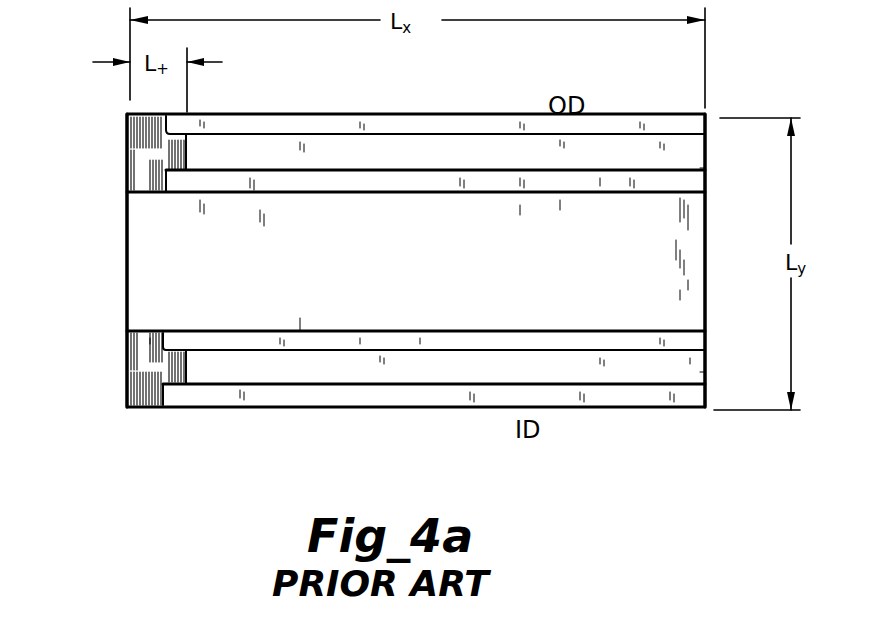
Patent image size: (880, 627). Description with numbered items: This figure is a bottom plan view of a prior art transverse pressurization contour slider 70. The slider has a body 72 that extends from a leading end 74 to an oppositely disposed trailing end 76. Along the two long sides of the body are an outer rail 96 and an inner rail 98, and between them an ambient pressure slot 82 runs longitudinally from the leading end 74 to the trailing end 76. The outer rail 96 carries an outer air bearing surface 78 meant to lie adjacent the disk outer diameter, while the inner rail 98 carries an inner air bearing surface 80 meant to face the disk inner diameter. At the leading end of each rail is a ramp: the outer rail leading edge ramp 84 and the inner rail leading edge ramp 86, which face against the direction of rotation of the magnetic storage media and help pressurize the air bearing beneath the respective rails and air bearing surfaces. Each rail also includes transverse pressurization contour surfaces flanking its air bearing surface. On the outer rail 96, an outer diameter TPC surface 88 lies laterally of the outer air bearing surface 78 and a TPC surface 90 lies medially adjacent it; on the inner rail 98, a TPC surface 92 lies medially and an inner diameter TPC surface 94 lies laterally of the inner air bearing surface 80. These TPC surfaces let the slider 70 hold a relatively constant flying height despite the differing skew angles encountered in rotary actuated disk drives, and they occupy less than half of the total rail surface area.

The prior art TPC slider 70 is at (182, 493).
The body 72 is at (708, 217).
The leading end 74 is at (110, 240).
The trailing end 76 is at (879, 137).
The outer air bearing surface 78 is at (470, 148).
The inner air bearing surface 80 is at (543, 370).
The ambient pressure slot 82 is at (663, 297).
The outer rail leading edge ramp 84 is at (157, 150).
The inner rail leading edge ramp 86 is at (147, 370).
The outer diameter TPC surface 88 is at (308, 64).
The TPC surface 90 is at (240, 185).
The TPC surface 92 is at (300, 345).
The inner diameter TPC surface 94 is at (405, 393).
The outer rail 96 is at (767, 155).
The inner rail 98 is at (730, 371).